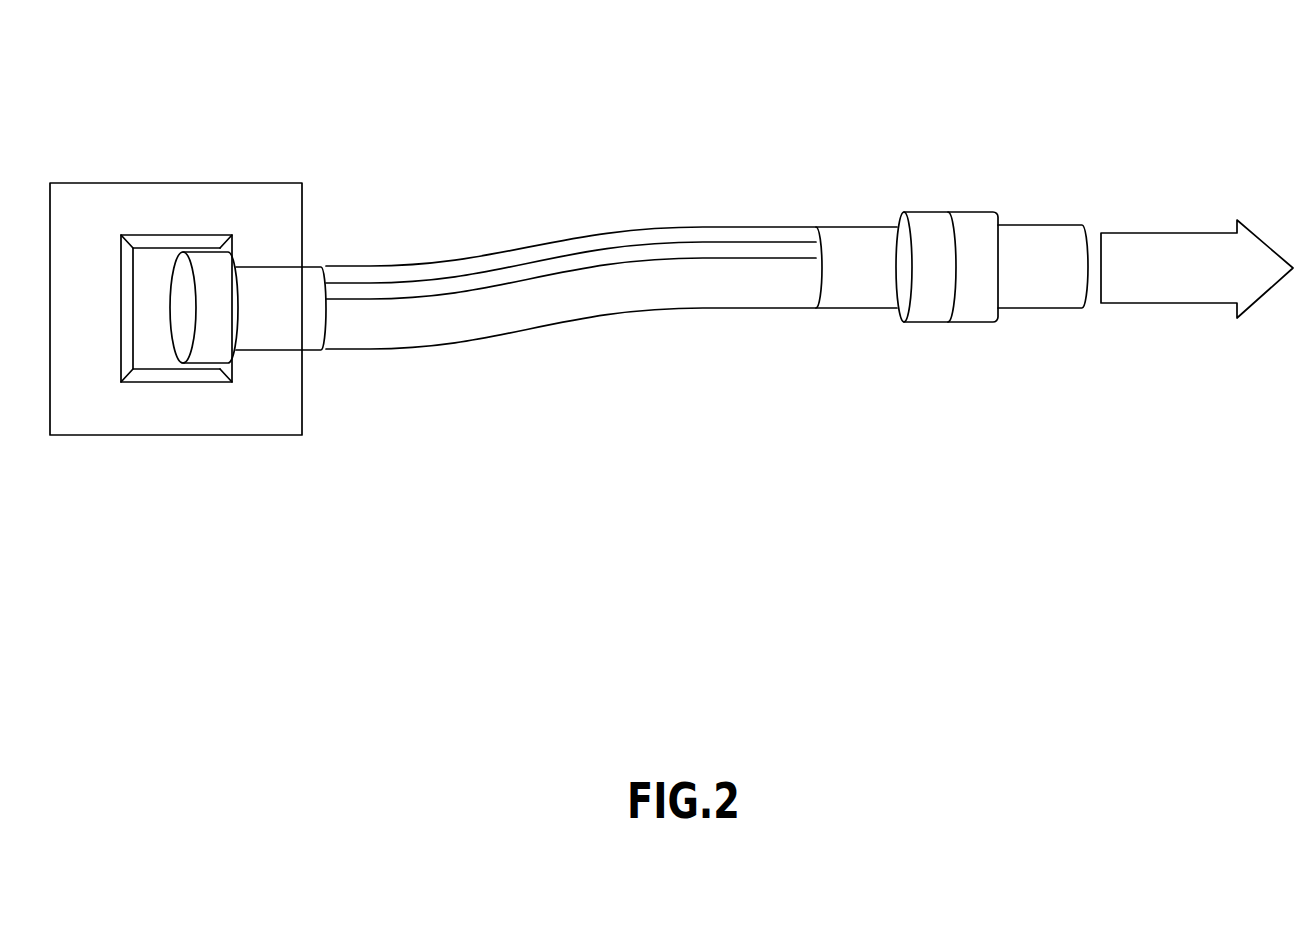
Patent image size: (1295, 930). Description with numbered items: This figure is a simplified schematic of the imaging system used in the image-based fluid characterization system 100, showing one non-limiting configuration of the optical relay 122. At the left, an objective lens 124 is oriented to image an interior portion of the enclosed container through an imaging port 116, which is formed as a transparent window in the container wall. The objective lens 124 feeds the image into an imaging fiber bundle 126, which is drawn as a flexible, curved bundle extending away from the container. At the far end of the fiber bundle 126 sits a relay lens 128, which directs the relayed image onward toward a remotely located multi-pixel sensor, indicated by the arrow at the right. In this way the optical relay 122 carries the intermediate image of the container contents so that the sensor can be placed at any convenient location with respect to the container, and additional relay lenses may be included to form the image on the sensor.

The image-based fluid characterization system 100 is at (618, 47).
The imaging port 116 is at (170, 362).
The optical relay 122 is at (731, 343).
The objective lens 124 is at (270, 338).
The imaging fiber bundle 126 is at (557, 315).
The relay lens 128 is at (930, 313).